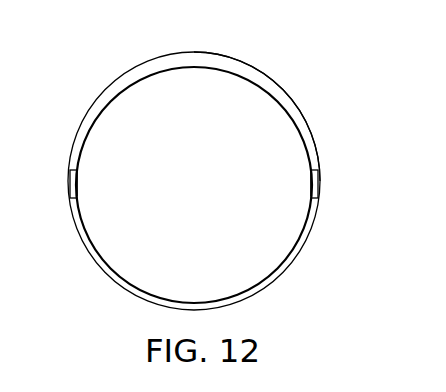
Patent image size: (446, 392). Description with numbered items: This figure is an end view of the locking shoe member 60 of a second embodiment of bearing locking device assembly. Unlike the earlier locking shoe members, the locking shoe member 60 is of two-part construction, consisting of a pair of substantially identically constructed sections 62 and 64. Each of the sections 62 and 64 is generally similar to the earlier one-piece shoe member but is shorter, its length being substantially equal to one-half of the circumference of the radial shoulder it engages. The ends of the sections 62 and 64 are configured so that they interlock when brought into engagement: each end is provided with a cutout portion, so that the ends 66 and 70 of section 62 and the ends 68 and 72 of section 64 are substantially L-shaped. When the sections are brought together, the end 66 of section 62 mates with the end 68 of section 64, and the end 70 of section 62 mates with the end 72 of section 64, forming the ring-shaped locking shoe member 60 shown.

The locking shoe member 60 is at (204, 44).
The section 62 is at (313, 133).
The section 64 is at (284, 273).
The end 66 is at (318, 184).
The end 68 is at (311, 185).
The end 70 is at (70, 183).
The end 72 is at (77, 185).